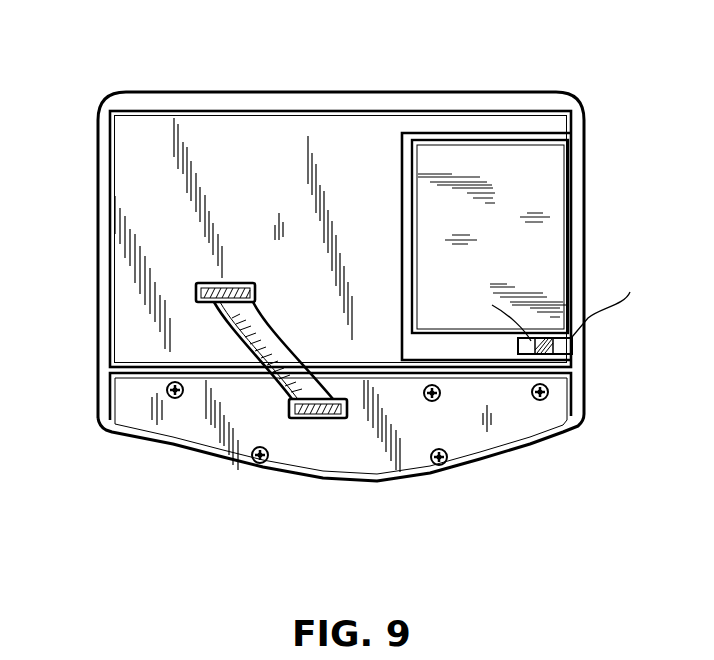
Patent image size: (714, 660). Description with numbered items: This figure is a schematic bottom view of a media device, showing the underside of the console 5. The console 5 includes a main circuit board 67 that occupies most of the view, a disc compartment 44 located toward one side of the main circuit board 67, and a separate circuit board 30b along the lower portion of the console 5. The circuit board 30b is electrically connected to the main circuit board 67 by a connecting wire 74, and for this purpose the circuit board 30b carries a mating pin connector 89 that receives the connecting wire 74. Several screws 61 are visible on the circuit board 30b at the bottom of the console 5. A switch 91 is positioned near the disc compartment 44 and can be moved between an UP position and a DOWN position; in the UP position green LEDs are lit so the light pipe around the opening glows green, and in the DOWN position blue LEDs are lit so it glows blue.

The console 5 is at (98, 223).
The main circuit board 67 is at (355, 132).
The disc compartment 44 is at (548, 187).
The connecting wire 74 is at (265, 337).
The switch 91 is at (587, 342).
The mating pin connector 89 is at (288, 408).
The circuit board 30b is at (178, 440).
The screws 61 is at (432, 459).